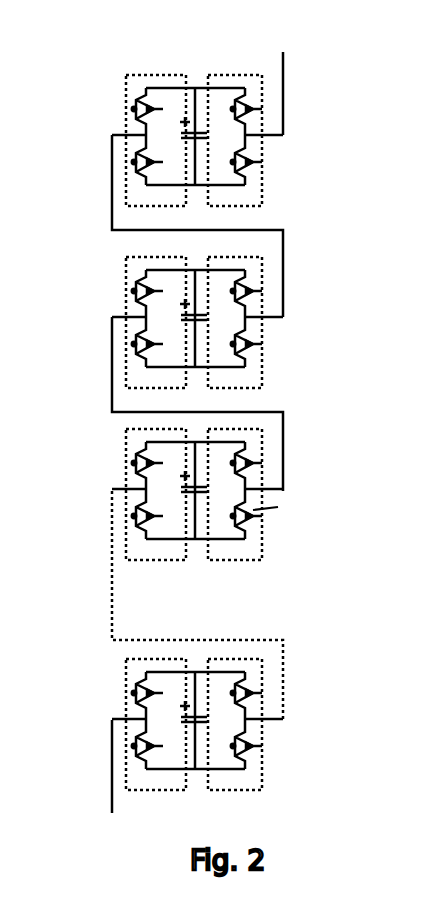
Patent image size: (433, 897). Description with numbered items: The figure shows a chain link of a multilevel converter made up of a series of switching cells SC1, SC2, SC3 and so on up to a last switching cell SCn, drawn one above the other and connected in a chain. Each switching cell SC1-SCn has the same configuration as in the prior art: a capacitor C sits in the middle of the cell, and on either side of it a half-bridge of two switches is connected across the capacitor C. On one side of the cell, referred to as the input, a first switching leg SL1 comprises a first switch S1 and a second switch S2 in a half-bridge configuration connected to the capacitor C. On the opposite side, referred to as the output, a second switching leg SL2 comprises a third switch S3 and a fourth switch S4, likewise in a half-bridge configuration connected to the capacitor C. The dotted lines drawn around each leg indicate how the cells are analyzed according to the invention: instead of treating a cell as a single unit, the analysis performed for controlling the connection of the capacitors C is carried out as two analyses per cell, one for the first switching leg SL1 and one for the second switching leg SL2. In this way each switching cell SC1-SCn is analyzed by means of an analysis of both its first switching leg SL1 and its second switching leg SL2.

The first switching cell SC1 is at (112, 78).
The second switching cell SC2 is at (112, 290).
The third switching cell SC3 is at (108, 470).
The n-th switching cell SCn is at (98, 666).
The first switching leg SL1 is at (168, 73).
The second switching leg SL2 is at (233, 73).
The capacitor C is at (202, 127).
The first switch S1 is at (137, 117).
The second switch S2 is at (137, 163).
The third switch S3 is at (253, 108).
The fourth switch S4 is at (253, 162).